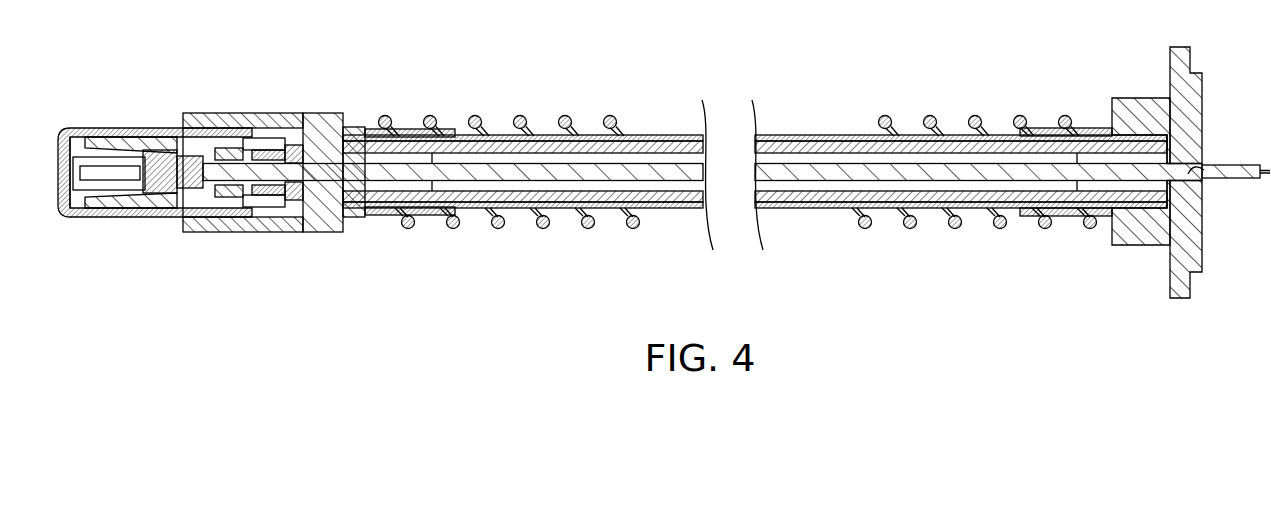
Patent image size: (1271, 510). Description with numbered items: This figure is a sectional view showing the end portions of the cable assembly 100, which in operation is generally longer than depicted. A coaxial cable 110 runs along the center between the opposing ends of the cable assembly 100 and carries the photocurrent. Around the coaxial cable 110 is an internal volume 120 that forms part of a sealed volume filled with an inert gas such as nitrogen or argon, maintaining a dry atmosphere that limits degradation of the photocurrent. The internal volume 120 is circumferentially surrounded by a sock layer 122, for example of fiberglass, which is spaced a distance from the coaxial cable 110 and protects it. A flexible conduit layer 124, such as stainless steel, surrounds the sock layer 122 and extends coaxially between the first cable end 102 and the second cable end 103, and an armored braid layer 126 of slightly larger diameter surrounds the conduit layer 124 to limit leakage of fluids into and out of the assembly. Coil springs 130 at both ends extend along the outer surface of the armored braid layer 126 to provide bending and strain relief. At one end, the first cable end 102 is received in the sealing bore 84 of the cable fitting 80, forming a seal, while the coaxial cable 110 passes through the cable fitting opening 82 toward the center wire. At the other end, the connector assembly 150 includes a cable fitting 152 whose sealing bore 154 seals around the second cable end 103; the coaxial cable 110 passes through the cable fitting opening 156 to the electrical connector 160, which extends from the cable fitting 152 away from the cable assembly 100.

The cable fitting 80 is at (1168, 283).
The cable fitting opening 82 is at (1200, 168).
The sealing bore 84 is at (1150, 197).
The cable assembly 100 is at (461, 86).
The first cable end 102 is at (1125, 130).
The second cable end 103 is at (358, 133).
The coaxial cable 110 is at (1240, 162).
The internal volume 120 is at (850, 162).
The sock layer 122 is at (827, 150).
The conduit layer 124 is at (790, 141).
The armored braid layer 126 is at (685, 133).
The coil springs 130 is at (613, 112).
The connector assembly 150 is at (146, 262).
The cable fitting 152 is at (312, 233).
The sealing bore 154 is at (393, 213).
The cable fitting opening 156 is at (299, 167).
The electrical connector 160 is at (170, 127).